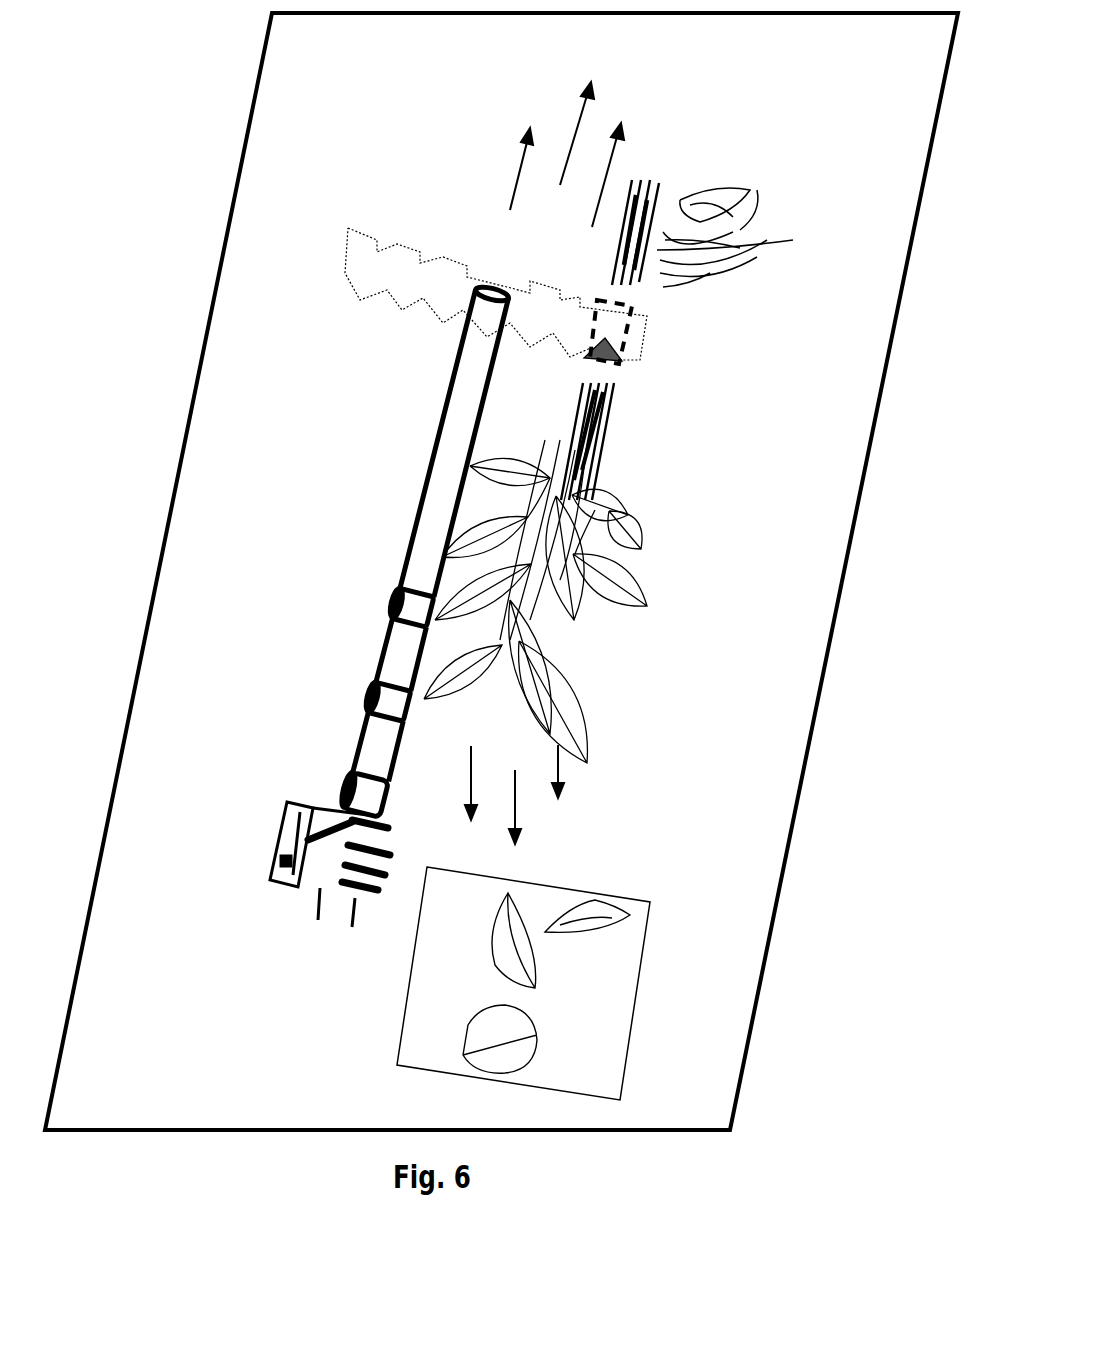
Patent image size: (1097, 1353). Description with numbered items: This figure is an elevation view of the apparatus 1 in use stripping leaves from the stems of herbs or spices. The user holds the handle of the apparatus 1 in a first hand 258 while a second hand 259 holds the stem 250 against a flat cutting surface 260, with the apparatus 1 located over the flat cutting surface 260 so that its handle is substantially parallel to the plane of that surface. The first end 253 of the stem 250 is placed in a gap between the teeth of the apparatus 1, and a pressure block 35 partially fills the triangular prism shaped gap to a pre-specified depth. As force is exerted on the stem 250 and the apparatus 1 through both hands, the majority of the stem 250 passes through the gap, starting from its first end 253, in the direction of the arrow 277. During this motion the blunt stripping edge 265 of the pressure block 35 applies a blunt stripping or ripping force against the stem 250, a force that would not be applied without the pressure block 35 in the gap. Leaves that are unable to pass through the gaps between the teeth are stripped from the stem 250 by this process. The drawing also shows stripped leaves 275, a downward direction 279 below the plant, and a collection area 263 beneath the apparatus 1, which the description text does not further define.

The apparatus 1 is at (322, 558).
The pressure block 35 is at (622, 357).
The stem 250 is at (607, 252).
The first end of the stem 253 is at (667, 182).
The first hand 258 is at (310, 888).
The second hand 259 is at (757, 253).
The flat cutting surface 260 is at (207, 330).
The collection container 263 is at (633, 977).
The blunt stripping edge 265 is at (610, 367).
The removed leaves 275 is at (587, 717).
The arrow 277 is at (522, 175).
The downward direction 279 is at (563, 775).